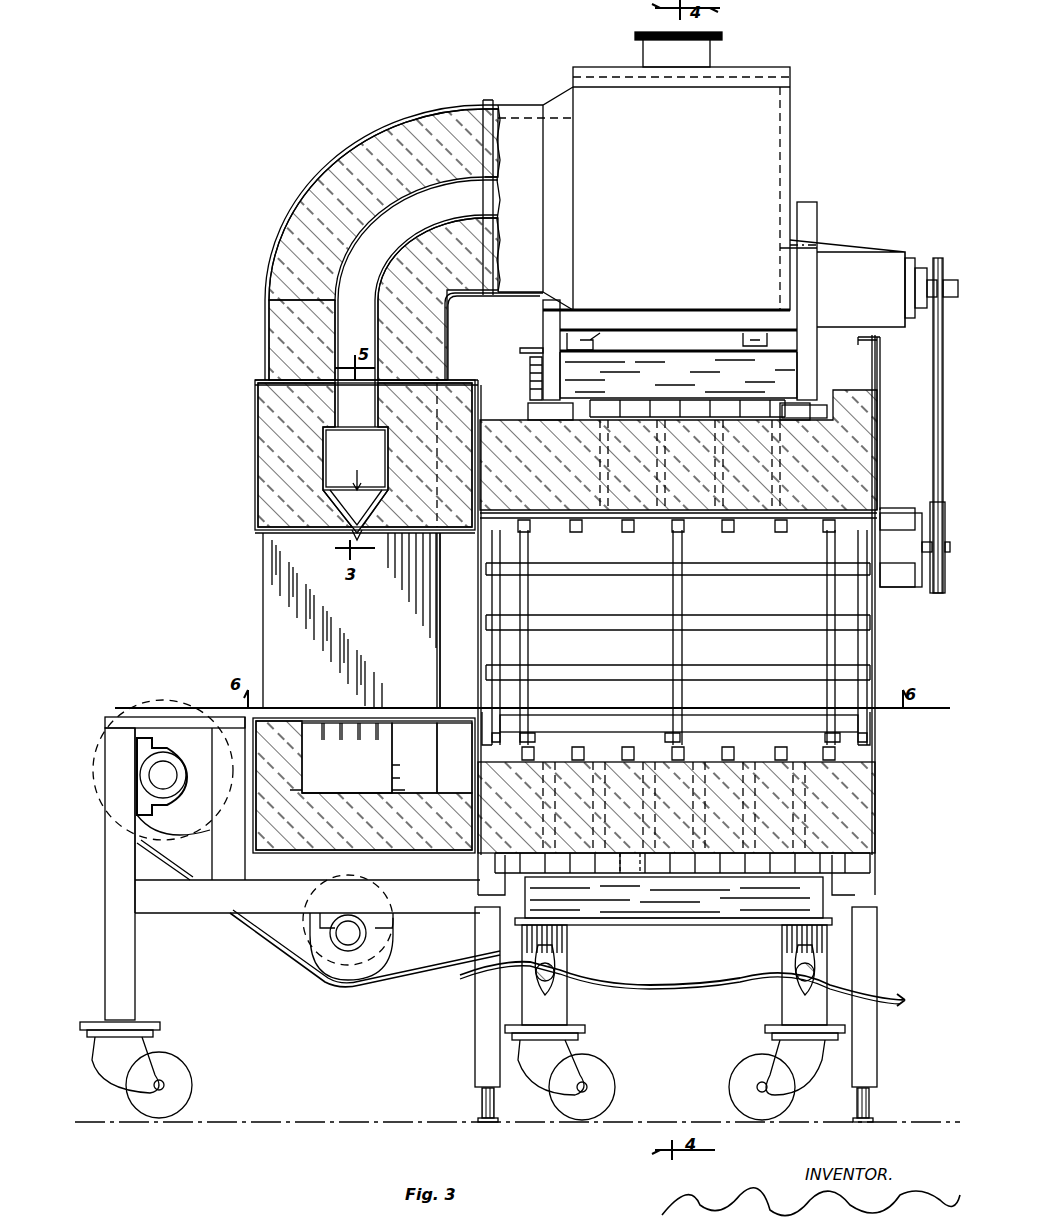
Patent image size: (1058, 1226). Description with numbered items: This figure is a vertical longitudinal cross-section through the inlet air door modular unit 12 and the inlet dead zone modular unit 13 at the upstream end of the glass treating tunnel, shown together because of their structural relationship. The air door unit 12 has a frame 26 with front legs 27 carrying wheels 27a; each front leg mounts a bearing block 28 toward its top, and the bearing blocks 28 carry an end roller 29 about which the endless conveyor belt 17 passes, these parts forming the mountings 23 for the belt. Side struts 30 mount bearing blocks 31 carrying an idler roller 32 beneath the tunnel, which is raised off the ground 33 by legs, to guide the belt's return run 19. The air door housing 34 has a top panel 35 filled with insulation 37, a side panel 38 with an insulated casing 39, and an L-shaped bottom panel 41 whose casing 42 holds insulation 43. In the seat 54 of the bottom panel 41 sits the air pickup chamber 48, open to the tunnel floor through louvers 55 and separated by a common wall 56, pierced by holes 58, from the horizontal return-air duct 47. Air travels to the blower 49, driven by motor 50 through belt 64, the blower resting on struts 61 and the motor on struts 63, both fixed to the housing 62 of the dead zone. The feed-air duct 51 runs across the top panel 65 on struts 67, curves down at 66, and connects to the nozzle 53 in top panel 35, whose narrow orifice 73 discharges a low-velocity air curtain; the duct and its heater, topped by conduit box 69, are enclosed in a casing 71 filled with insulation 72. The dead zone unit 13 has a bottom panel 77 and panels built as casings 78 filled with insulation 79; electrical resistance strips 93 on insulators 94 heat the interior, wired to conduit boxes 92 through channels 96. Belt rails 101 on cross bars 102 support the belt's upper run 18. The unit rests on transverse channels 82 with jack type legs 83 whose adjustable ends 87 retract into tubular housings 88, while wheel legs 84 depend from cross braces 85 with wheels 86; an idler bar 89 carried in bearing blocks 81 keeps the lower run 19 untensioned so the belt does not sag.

The inlet air door modular unit 12 is at (240, 650).
The inlet dead zone modular unit 13 is at (930, 845).
The conveyor belt 17 is at (413, 991).
The upper run of the belt 18 is at (420, 706).
The return run of the belt 19 is at (665, 985).
The mountings for the conveyor belt 23 is at (117, 862).
The frame 26 is at (256, 900).
The front legs 27 is at (137, 982).
The wheels 27a is at (192, 1090).
The bearing block 28 is at (165, 752).
The end roller 29 is at (100, 770).
The side struts 30 is at (430, 905).
The bearing blocks 31 is at (308, 922).
The idler roller 32 is at (338, 985).
The ground 33 is at (375, 1125).
The air door housing 34 is at (244, 546).
The top panel 35 is at (278, 458).
The insulation 37 is at (278, 430).
The side panel 38 is at (270, 595).
The casing 39 is at (354, 620).
The bottom panel 41 is at (255, 840).
The casing 42 is at (262, 855).
The insulation 43 is at (318, 835).
The horizontal return-air duct 47 is at (435, 760).
The air pickup chamber 48 is at (347, 758).
The blower 49 is at (795, 158).
The motor 50 is at (905, 575).
The feed-air duct 51 is at (803, 75).
The nozzle 53 is at (355, 480).
The seat 54 is at (320, 790).
The louvers 55 is at (340, 720).
The common wall 56 is at (398, 740).
The holes 58 is at (402, 762).
The struts 61 is at (622, 342).
The housing of dead zone 62 is at (888, 412).
The struts 63 is at (888, 510).
The belt 64 is at (930, 430).
The top panel 65 is at (727, 418).
The curved portion of feed-air duct 66 is at (330, 165).
The struts 67 is at (700, 318).
The conduit box 69 is at (678, 49).
The casing 71 is at (458, 108).
The insulation 72 is at (412, 140).
The orifice 73 is at (350, 538).
The bottom panel 77 is at (885, 796).
The casings 78 is at (690, 860).
The insulation 79 is at (728, 862).
The bearing block 81 is at (555, 958).
The transverse channels 82 is at (868, 893).
The jack type leg 83 is at (475, 1038).
The wheel legs 84 is at (566, 1010).
The cross braces 85 is at (848, 872).
The wheel 86 is at (618, 1090).
The adjustable ends 87 is at (480, 1102).
The tubular housing 88 is at (493, 1072).
The idler bar 89 is at (556, 972).
The conduit box 92 is at (668, 940).
The electrical resistance strips 93 is at (578, 548).
The insulators 94 is at (512, 548).
The channels 96 is at (800, 535).
The belt rails 101 is at (740, 722).
The cross bars 102 is at (480, 708).